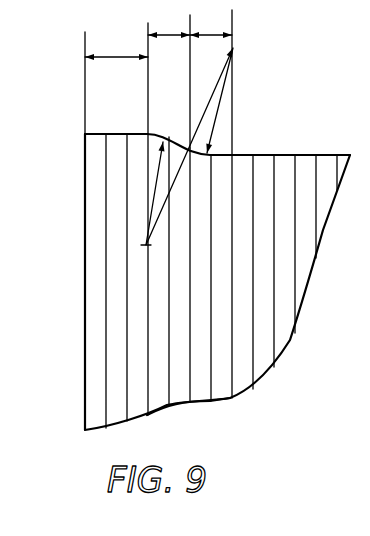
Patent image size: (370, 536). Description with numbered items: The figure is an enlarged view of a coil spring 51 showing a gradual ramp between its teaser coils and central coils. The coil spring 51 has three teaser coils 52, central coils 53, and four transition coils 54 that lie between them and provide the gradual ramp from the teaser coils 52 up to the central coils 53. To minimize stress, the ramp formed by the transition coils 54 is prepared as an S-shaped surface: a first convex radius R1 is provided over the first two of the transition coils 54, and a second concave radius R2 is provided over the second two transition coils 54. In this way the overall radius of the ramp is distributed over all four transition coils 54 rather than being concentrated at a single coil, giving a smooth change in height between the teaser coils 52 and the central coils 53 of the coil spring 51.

The coil spring 51 is at (335, 85).
The teaser coils 52 is at (127, 117).
The central coils 53 is at (328, 155).
The transition coils 54 is at (220, 394).
The first convex radius R1 is at (157, 178).
The second concave radius R2 is at (221, 97).